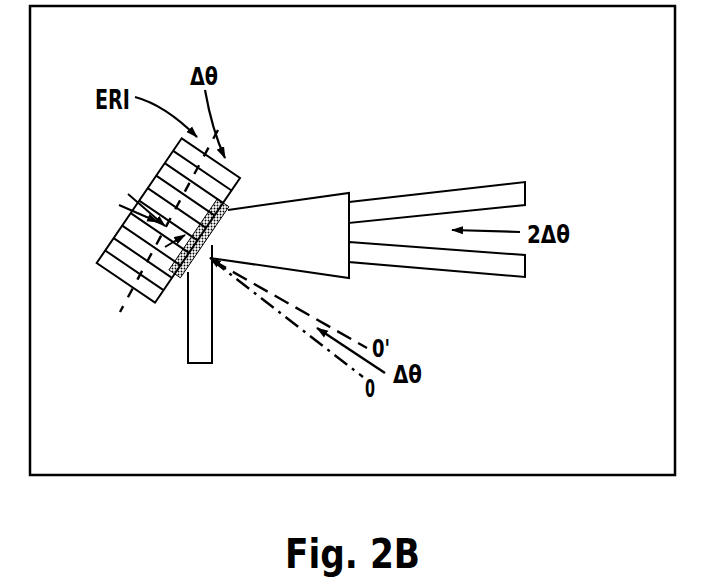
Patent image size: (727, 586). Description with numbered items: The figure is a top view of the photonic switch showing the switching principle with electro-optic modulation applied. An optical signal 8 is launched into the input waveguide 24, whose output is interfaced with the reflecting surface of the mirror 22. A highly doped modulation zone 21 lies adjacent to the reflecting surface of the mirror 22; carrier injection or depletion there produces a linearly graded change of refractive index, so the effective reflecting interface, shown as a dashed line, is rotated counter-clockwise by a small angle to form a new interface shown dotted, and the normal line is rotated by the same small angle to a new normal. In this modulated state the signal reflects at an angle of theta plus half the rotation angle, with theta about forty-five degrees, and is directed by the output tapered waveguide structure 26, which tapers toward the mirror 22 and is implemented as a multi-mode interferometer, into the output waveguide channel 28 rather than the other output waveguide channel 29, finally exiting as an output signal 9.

The optical signal 8 is at (197, 368).
The output signal 9 is at (533, 195).
The modulation zone 21 is at (223, 210).
The mirror 22 is at (120, 237).
The input waveguide 24 is at (188, 305).
The output tapered waveguide structure 26 is at (330, 234).
The output waveguide channel 28 is at (473, 197).
The output waveguide channel 29 is at (475, 262).